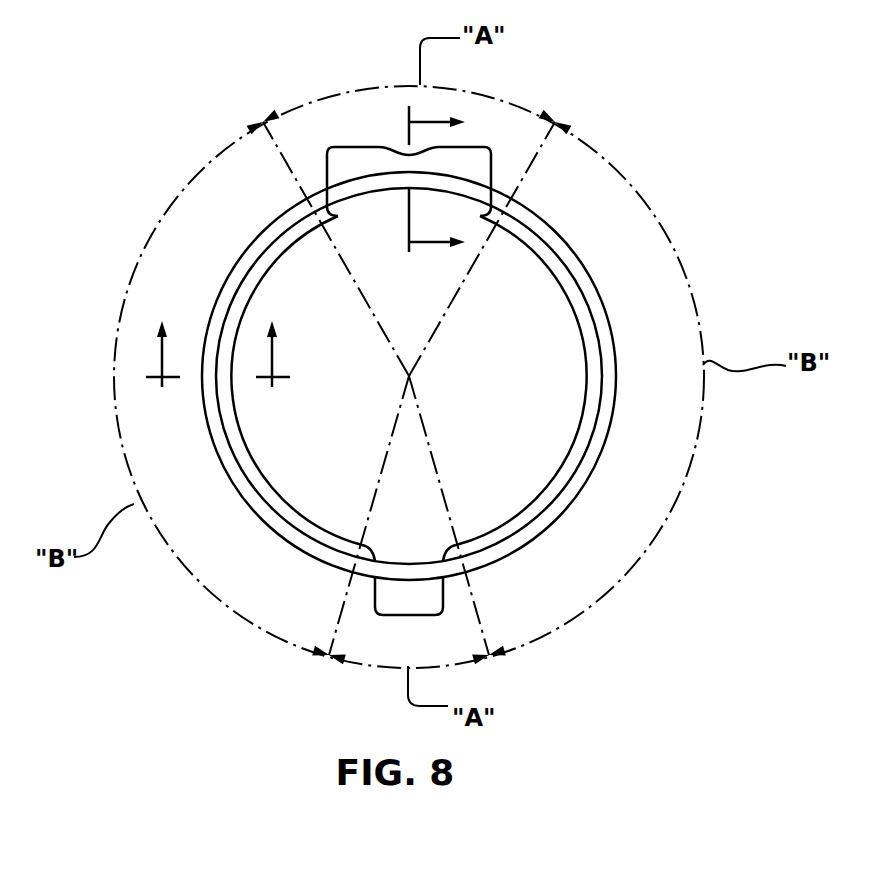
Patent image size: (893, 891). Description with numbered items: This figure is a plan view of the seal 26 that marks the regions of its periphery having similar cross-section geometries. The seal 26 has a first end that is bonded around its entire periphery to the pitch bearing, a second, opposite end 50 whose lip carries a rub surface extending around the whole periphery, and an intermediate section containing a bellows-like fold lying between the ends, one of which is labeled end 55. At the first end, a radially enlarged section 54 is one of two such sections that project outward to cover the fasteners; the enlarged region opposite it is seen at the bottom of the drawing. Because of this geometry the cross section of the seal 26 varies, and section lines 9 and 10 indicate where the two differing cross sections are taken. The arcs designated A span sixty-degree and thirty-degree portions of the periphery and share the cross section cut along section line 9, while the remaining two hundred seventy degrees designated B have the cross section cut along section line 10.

The seal 26 is at (636, 126).
The second end 50 is at (600, 313).
The radially enlarged section 54 is at (345, 160).
The end 55 is at (422, 598).
The section line 9- 9 is at (420, 180).
The section line 10- 10 is at (217, 373).